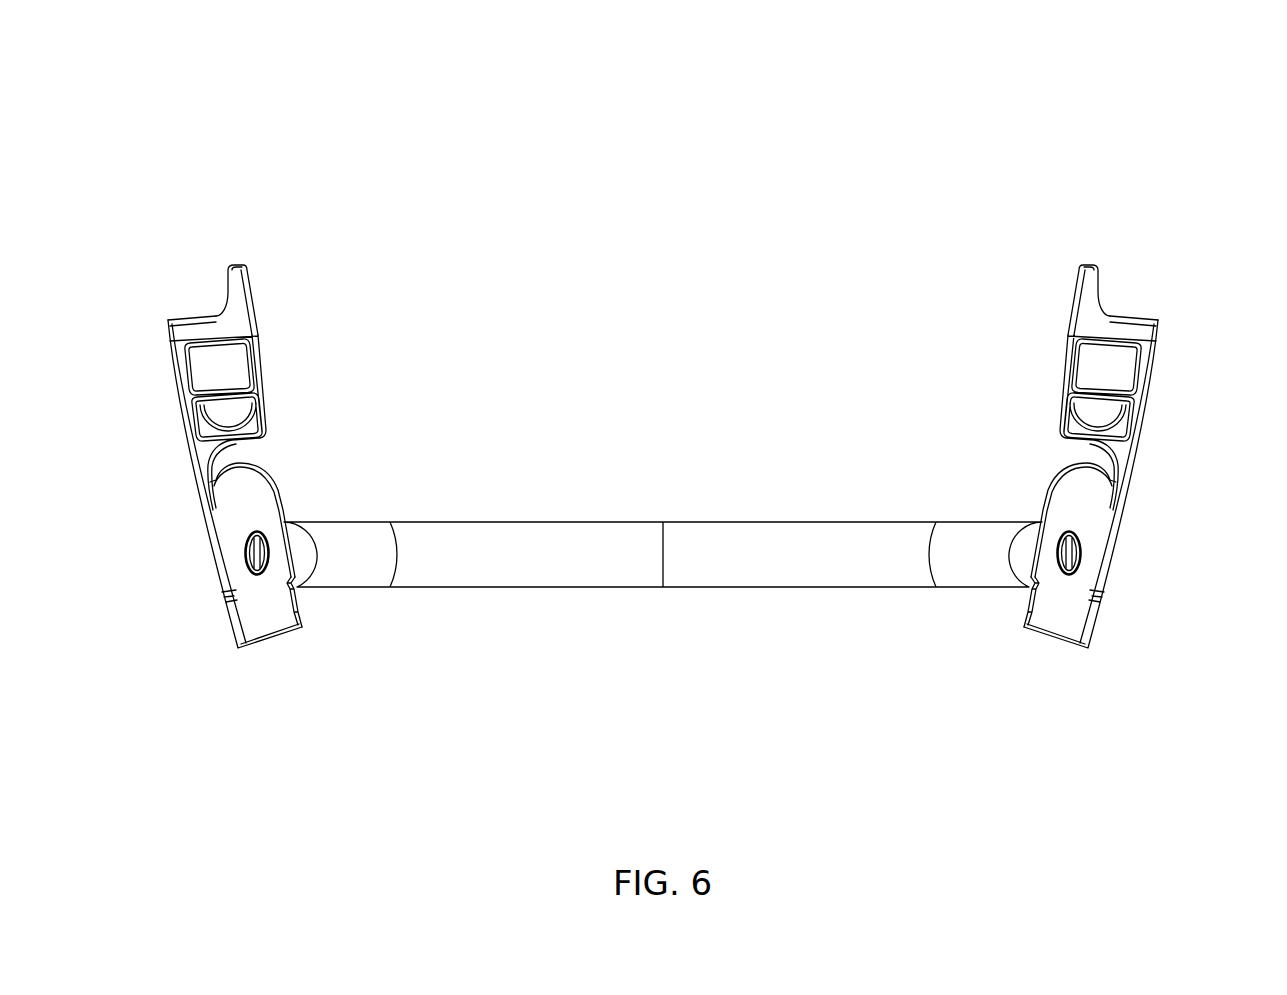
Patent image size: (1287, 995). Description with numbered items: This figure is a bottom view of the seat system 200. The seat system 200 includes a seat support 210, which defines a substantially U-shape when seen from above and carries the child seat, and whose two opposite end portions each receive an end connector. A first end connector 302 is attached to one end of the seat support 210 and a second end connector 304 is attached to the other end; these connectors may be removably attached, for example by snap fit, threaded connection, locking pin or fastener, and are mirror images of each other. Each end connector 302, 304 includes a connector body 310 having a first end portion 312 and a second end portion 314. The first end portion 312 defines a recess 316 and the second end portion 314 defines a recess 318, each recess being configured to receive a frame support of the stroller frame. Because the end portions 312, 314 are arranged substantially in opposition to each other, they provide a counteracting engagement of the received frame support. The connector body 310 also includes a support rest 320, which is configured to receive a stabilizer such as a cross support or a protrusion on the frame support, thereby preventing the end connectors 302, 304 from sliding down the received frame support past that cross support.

The seat system 200 is at (661, 391).
The seat support 210 is at (728, 538).
The first end connector 302 is at (1128, 518).
The second end connector 304 is at (198, 497).
The connector body 310 is at (200, 463).
The first end portion 312 is at (270, 325).
The second end portion 314 is at (211, 630).
The recess 316 is at (208, 299).
The recess 318 is at (270, 617).
The support rest 320 is at (306, 608).